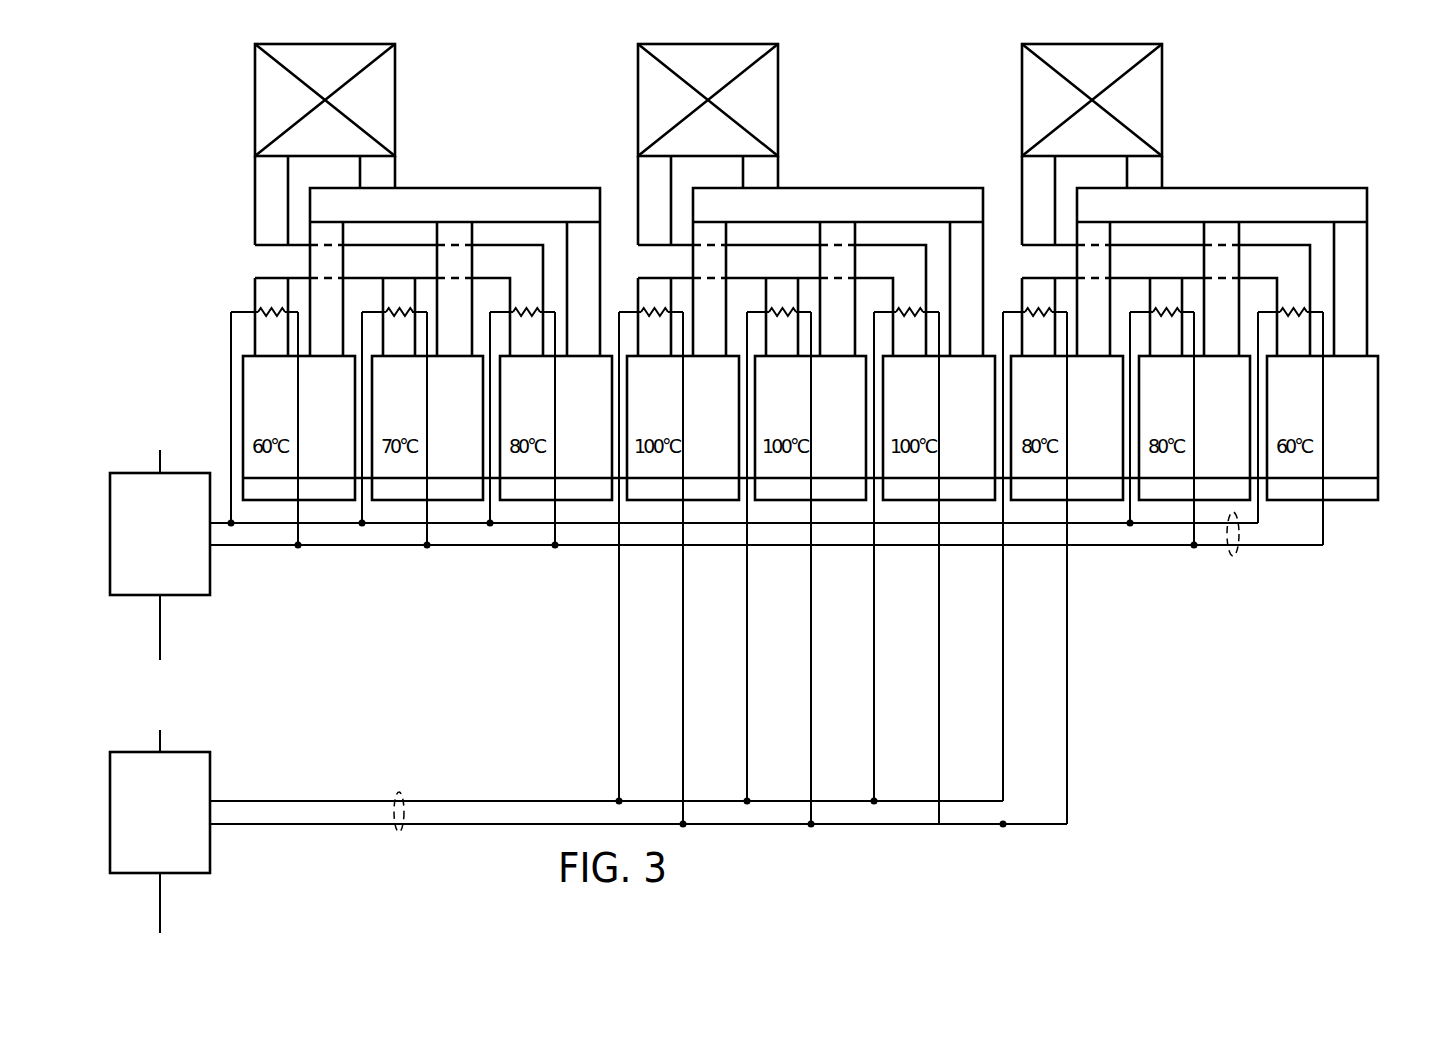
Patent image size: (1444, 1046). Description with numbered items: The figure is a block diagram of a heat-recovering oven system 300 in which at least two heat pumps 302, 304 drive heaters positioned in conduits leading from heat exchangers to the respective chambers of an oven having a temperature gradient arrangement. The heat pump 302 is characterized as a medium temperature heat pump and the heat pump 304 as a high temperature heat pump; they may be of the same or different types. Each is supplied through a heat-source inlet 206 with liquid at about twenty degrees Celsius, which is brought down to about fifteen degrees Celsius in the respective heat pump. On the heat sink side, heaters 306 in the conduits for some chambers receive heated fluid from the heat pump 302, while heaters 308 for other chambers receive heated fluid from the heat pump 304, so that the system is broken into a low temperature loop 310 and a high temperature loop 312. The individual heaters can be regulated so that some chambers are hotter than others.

The heat-recovering oven system 300 is at (1264, 101).
The medium temperature heat pump 302 is at (132, 598).
The high temperature heat pump 304 is at (132, 876).
The heat-source inlet 206 is at (187, 919).
The heaters 306 is at (267, 307).
The heaters 308 is at (660, 318).
The low temperature loop 310 is at (1233, 557).
The high temperature loop 312 is at (398, 833).